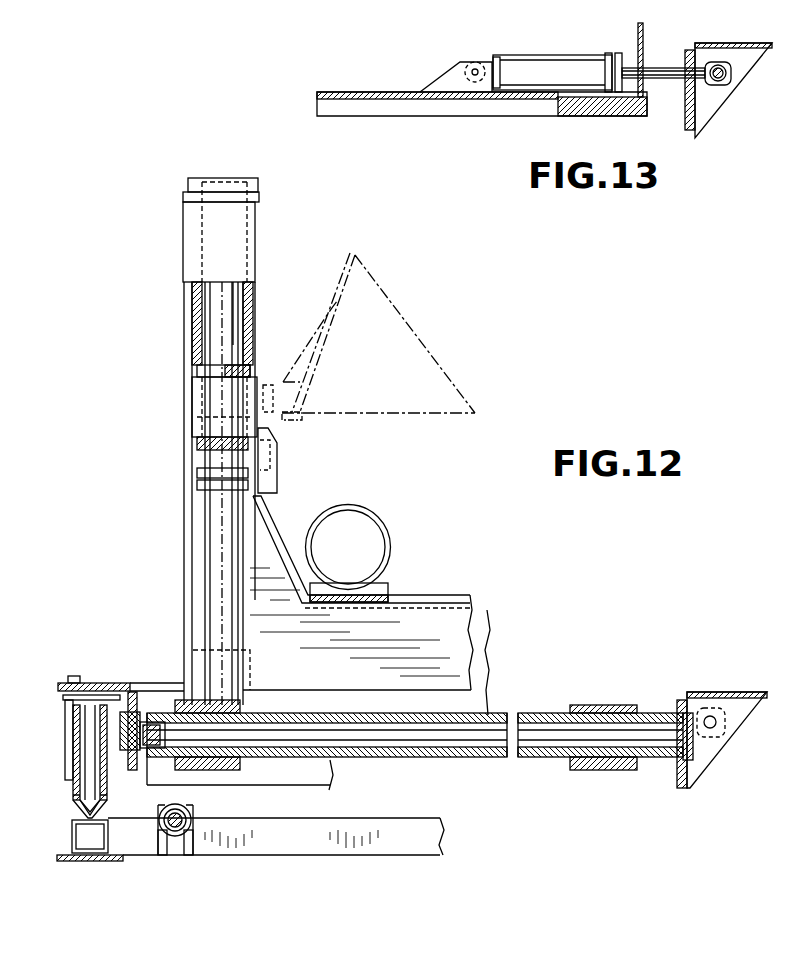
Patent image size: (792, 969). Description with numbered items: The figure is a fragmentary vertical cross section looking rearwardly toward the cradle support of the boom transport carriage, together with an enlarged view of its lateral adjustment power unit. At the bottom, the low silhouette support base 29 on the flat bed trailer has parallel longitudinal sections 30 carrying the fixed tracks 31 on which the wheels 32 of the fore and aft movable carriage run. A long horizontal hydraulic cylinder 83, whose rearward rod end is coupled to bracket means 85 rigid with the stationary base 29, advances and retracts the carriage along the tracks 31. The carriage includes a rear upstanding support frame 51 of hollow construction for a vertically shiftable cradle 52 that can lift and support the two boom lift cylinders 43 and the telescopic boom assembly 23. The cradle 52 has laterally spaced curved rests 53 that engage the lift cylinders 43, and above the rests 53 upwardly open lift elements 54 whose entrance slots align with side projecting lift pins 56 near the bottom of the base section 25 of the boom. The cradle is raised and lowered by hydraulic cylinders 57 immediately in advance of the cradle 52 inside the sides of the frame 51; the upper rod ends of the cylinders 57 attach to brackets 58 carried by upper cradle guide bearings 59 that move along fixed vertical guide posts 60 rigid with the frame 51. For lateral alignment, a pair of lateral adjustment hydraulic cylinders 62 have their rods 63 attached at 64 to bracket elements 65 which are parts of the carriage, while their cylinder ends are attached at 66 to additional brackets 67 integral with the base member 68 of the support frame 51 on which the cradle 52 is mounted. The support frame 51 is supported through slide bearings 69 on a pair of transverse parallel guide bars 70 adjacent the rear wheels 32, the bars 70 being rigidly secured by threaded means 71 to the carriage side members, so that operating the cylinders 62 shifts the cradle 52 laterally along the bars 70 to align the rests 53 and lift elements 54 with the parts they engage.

In FIG. 12, the telescopic boom assembly 23 is at (107, 680).
In FIG. 12, the base section 25 is at (310, 365).
In FIG. 12, the support base 29 is at (140, 838).
In FIG. 12, the longitudinal sections 30 is at (73, 840).
In FIG. 12, the longitudinal tracks 31 is at (78, 810).
In FIG. 12, the wheels 32 is at (78, 798).
In FIG. 12, the boom lift cylinders 43 is at (387, 540).
In FIG. 13, the upstanding support frame 51 is at (642, 55).
In FIG. 12, the upstanding support frame 51 is at (184, 410).
In FIG. 12, the cradle 52 is at (345, 665).
In FIG. 12, the curved rests 53 is at (390, 590).
In FIG. 12, the lift elements 54 is at (270, 463).
In FIG. 12, the lift pins 56 is at (273, 395).
In FIG. 12, the hydraulic cylinders 57 is at (210, 618).
In FIG. 12, the brackets 58 is at (205, 440).
In FIG. 12, the upper cradle guide bearings 59 is at (197, 425).
In FIG. 12, the vertical guide posts 60 is at (237, 313).
In FIG. 13, the lateral adjustment hydraulic cylinders 62 is at (555, 62).
In FIG. 13, the rods 63 is at (670, 80).
In FIG. 12, the rods 63 is at (135, 692).
In FIG. 13, the rod attachment 64 is at (725, 80).
In FIG. 12, the rod attachment 64 is at (712, 728).
In FIG. 13, the bracket elements 65 is at (745, 43).
In FIG. 12, the bracket elements 65 is at (745, 692).
In FIG. 13, the cylinder end attachment 66 is at (478, 68).
In FIG. 13, the brackets 67 is at (437, 80).
In FIG. 13, the base member 68 is at (625, 118).
In FIG. 12, the slide bearings 69 is at (225, 768).
In FIG. 12, the guide bars 70 is at (495, 715).
In FIG. 12, the threaded means 71 is at (143, 722).
In FIG. 12, the horizontal hydraulic cylinder 83 is at (195, 815).
In FIG. 12, the bracket means 85 is at (190, 850).